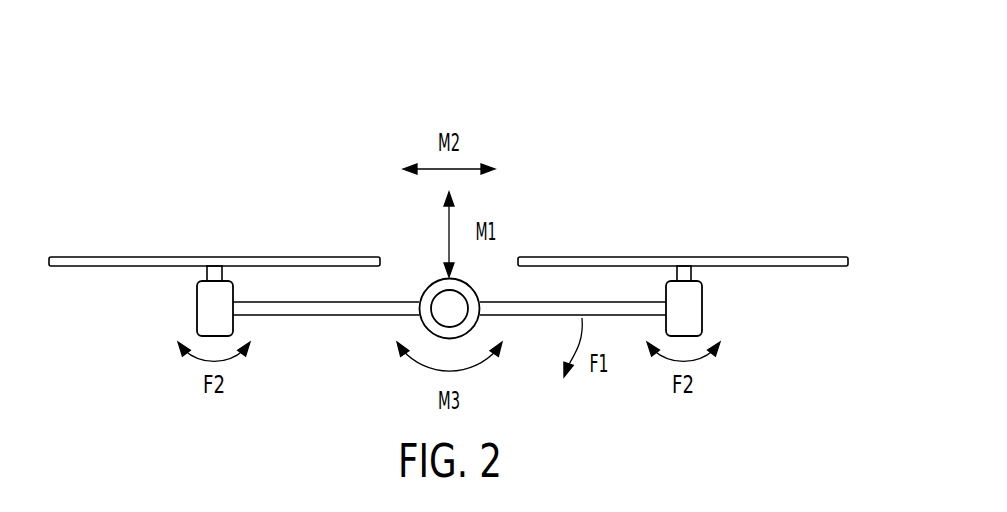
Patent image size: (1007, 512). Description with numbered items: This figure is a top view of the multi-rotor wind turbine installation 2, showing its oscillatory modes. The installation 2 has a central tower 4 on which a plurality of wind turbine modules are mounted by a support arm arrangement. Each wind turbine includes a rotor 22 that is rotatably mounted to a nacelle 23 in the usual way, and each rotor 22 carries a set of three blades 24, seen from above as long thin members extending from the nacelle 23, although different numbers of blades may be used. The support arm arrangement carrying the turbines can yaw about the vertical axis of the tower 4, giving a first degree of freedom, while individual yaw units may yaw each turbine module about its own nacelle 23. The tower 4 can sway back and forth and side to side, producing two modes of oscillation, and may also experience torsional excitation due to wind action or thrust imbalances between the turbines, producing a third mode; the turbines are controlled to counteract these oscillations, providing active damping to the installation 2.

The wind turbine installation 2 is at (674, 85).
The tower 4 is at (486, 266).
The rotor 22 is at (203, 273).
The nacelle 23 is at (196, 313).
The blades 24 is at (113, 257).